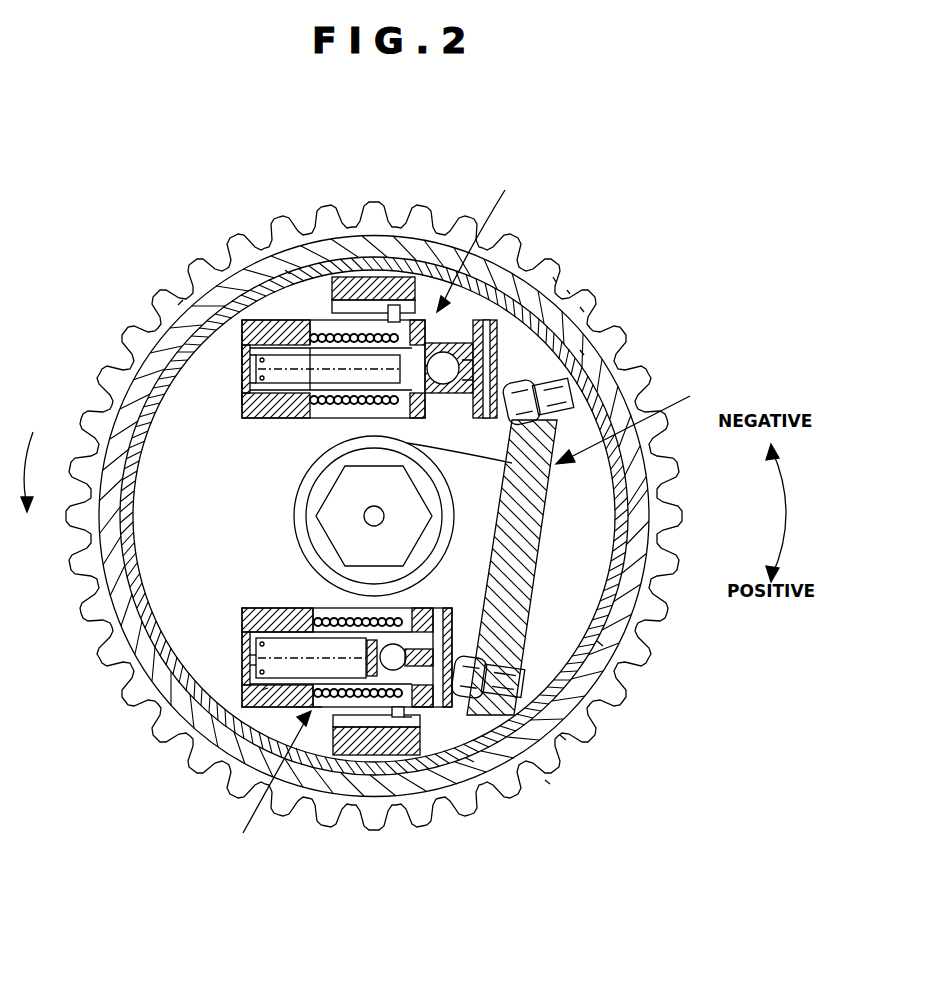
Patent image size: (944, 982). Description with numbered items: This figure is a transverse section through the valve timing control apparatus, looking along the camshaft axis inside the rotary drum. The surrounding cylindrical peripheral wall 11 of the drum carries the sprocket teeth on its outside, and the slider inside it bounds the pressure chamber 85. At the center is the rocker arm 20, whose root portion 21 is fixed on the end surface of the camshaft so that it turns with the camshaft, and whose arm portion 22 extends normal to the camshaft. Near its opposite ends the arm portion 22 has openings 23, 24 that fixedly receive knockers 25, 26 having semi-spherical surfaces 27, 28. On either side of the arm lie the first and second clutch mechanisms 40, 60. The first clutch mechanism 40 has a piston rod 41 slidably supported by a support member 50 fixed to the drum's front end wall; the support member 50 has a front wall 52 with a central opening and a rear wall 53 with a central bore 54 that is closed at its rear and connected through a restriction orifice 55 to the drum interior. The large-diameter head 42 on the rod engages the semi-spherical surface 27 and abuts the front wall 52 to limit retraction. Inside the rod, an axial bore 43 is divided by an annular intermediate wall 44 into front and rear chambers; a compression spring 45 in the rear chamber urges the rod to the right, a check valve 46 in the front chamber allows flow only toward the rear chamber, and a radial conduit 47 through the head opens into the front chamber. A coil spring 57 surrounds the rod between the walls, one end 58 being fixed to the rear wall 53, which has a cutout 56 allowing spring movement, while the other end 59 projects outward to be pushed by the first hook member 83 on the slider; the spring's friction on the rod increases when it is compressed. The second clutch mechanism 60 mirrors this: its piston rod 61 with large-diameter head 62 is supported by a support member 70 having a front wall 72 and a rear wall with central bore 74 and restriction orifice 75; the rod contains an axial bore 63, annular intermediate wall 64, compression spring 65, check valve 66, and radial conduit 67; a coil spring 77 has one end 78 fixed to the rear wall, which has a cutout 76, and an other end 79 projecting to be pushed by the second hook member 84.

The cylindrical peripheral wall 11 is at (650, 568).
The rocker arm 20 is at (634, 417).
The root portion 21 is at (295, 517).
The arm portion 22 is at (540, 492).
The opening 23 is at (560, 395).
The opening 24 is at (562, 737).
The knocker 25 is at (580, 350).
The knocker 26 is at (547, 780).
The semi-spherical surface 27 is at (580, 307).
The semi-spherical surface 28 is at (530, 700).
The first clutch mechanism 40 is at (482, 236).
The piston rod 41 is at (553, 277).
The large-diameter head 42 is at (567, 290).
The axial bore 43 is at (278, 394).
The annular intermediate wall 44 is at (433, 404).
The compression spring 45 is at (268, 367).
The check valve 46 is at (498, 312).
The radial conduit 47 is at (486, 420).
The support member 50 is at (313, 318).
The front wall 52 is at (445, 352).
The rear wall 53 is at (247, 337).
The central bore 54 is at (242, 378).
The restriction orifice 55 is at (183, 300).
The cutout 56 is at (290, 273).
The coil spring 57 is at (385, 330).
The one end 58 is at (330, 363).
The other end 59 is at (396, 306).
The second clutch mechanism 60 is at (201, 862).
The piston rod 61 is at (408, 745).
The large-diameter head 62 is at (600, 643).
The axial bore 63 is at (337, 650).
The annular intermediate wall 64 is at (460, 616).
The compression spring 65 is at (250, 655).
The check valve 66 is at (455, 650).
The radial conduit 67 is at (470, 760).
The support member 70 is at (318, 710).
The front wall 72 is at (421, 718).
The central bore 74 is at (250, 665).
The restriction orifice 75 is at (265, 690).
The cutout 76 is at (330, 622).
The coil spring 77 is at (343, 693).
The one end 78 is at (300, 712).
The other end 79 is at (398, 720).
The first hook member 83 is at (368, 290).
The second hook member 84 is at (362, 757).
The pressure chamber 85 is at (195, 511).